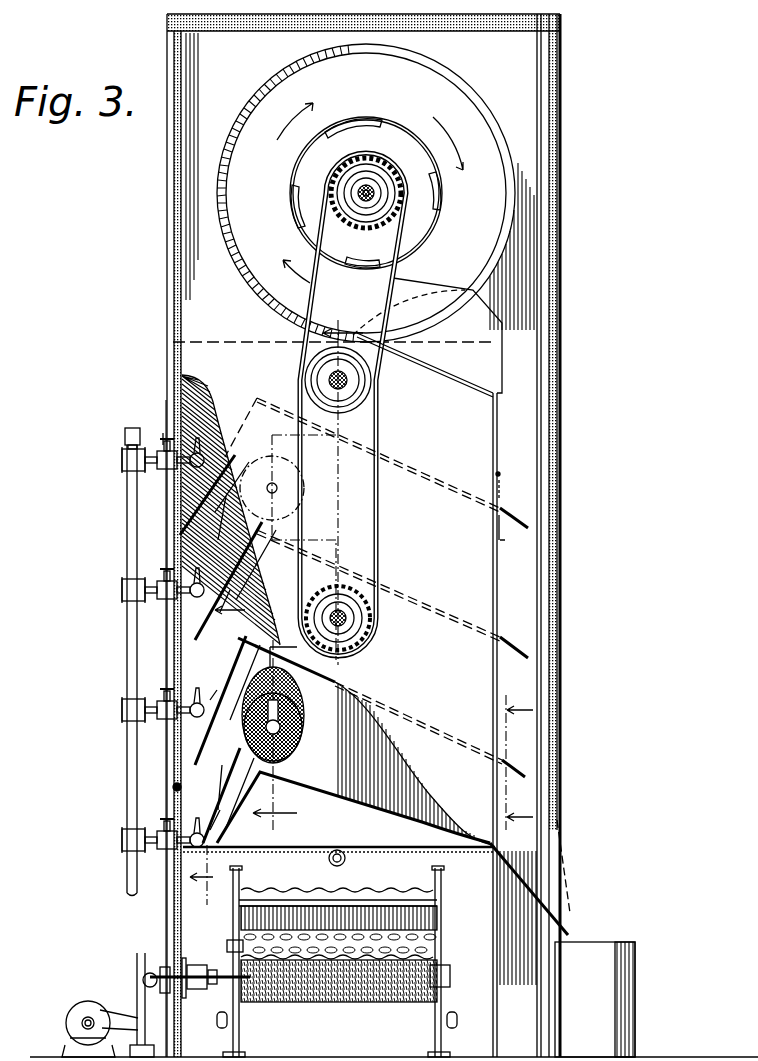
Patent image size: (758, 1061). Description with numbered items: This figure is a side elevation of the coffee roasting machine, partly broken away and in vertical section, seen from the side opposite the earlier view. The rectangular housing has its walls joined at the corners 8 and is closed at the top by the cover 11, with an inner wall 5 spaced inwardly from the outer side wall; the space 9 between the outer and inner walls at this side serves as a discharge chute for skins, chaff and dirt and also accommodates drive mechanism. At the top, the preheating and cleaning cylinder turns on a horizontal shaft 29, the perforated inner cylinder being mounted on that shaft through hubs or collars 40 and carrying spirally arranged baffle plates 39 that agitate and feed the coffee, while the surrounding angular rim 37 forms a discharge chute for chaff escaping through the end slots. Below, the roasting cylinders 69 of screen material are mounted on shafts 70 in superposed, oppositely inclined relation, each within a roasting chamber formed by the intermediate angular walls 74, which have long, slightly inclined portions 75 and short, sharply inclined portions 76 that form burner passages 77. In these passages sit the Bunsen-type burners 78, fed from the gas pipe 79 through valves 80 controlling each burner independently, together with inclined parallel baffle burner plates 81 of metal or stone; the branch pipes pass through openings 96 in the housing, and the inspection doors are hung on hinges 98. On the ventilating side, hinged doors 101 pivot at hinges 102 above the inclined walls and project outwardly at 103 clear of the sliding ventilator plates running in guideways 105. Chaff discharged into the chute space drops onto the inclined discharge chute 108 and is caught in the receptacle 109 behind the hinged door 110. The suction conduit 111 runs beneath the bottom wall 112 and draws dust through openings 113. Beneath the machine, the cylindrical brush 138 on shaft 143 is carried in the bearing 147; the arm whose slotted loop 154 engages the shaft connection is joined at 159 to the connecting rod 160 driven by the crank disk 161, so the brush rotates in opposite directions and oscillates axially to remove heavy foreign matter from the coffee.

The inner wall 5 is at (308, 581).
The corners 8 is at (163, 433).
The space 9 is at (217, 754).
The top or cover 11 is at (519, 762).
The shaft 29 is at (365, 193).
The rim 37 is at (453, 88).
The baffle plates 39 is at (377, 97).
The hubs or collars 40 is at (373, 197).
The roasting cylinders 69 is at (290, 760).
The shafts 70 is at (300, 740).
The intermediate angular walls 74 is at (422, 475).
The long inclined portions 75 is at (337, 683).
The short portions 76 is at (197, 478).
The burner passages 77 is at (223, 778).
The burners 78 is at (197, 597).
The gas pipe 79 is at (127, 642).
The valves 80 is at (166, 570).
The baffle burner plates 81 is at (227, 762).
The openings 96 is at (177, 475).
The hinges 98 is at (175, 787).
The hinged ventilator doors 101 is at (503, 495).
The hinge 102 is at (499, 474).
The projecting portions 103 is at (525, 518).
The guideways 105 is at (503, 547).
The inclined discharge plate or chute 108 is at (523, 875).
The receptacle 109 is at (600, 975).
The hinged door 110 is at (568, 890).
The pipe or conduit 111 is at (347, 860).
The bottom wall 112 is at (287, 850).
The openings 113 is at (331, 866).
The rotatable cylindrical brush 138 is at (318, 1002).
The shaft 143 is at (433, 1000).
The bearing 147 is at (198, 964).
The slotted end or loop 154 is at (141, 955).
The connection 159 is at (121, 1006).
The connecting rod 160 is at (120, 1005).
The crank disk 161 is at (72, 1027).